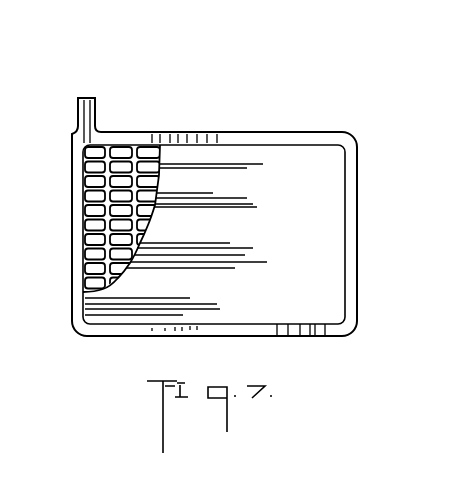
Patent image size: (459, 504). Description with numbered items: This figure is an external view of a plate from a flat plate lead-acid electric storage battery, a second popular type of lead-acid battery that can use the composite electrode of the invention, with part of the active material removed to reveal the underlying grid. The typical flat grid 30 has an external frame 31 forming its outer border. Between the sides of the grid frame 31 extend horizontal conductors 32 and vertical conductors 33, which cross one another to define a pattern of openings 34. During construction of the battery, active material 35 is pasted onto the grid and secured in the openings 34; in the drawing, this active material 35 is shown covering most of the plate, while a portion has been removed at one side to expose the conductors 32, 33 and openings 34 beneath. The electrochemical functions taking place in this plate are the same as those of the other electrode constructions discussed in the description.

The shoe sole insert / tray body 30 is at (319, 122).
The peripheral rim with serrations 31 is at (300, 323).
The cell rows of grid 32 is at (92, 215).
The grid cells 33 is at (135, 148).
The lower grid cells 34 is at (93, 265).
The ribbed bottom surface lines 35 is at (153, 298).